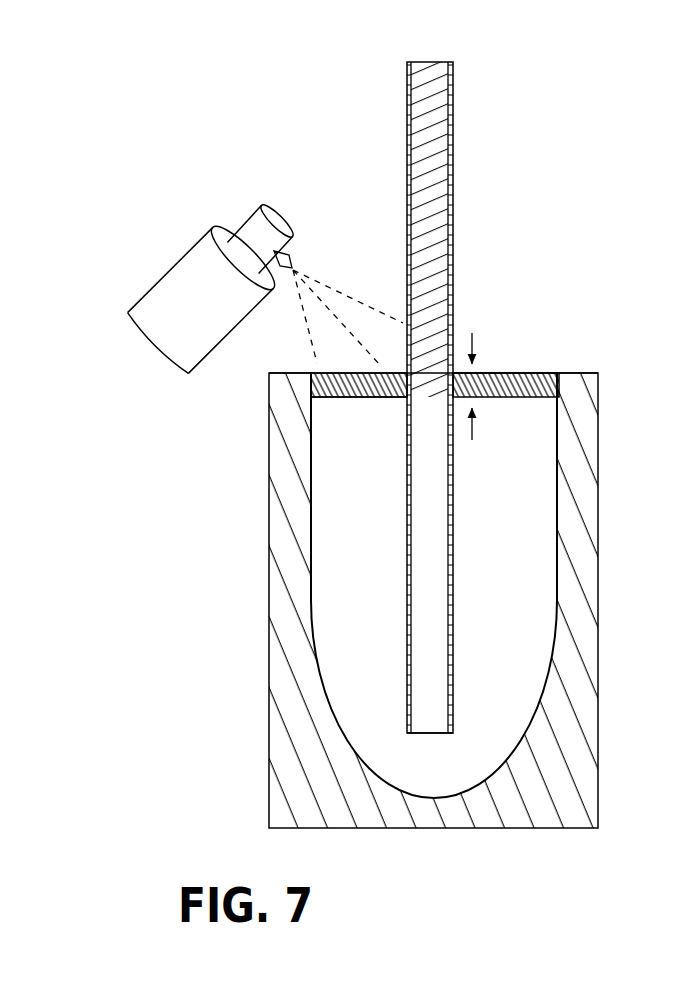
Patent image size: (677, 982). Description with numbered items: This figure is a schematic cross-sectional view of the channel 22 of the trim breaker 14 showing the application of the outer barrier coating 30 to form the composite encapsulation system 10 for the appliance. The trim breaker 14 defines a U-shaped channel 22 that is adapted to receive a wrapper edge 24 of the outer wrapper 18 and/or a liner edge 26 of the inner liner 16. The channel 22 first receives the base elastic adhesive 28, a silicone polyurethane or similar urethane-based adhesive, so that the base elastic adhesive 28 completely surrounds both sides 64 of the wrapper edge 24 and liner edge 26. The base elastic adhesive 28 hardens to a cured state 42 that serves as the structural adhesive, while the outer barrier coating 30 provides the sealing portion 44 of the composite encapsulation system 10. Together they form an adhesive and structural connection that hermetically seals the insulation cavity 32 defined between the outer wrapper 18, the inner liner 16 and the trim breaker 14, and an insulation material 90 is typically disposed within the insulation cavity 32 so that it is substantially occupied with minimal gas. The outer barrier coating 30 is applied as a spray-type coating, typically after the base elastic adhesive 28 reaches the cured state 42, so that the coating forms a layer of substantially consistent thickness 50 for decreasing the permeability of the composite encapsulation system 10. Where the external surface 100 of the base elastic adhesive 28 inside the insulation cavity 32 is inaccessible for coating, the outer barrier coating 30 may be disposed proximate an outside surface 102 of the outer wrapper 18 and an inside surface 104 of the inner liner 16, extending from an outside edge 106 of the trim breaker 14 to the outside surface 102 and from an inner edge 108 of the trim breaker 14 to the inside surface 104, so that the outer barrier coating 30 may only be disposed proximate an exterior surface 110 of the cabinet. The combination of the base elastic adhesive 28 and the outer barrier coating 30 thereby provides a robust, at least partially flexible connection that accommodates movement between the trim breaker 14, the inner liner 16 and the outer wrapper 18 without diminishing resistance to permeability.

The composite encapsulation system 10 is at (547, 186).
The trim breaker 14 is at (254, 639).
The inner liner 16 is at (431, 449).
The outer wrapper 18 is at (431, 449).
The channel 22 is at (503, 366).
The wrapper edge 24 is at (408, 735).
The liner edge 26 is at (452, 735).
The base elastic adhesive 28 is at (428, 585).
The outer barrier coating 30 is at (396, 308).
The insulation cavity 32 is at (425, 198).
The cured state 42 is at (540, 570).
The sealing portion 44 is at (332, 403).
The substantially consistent thickness 50 is at (473, 423).
The both sides 64 is at (409, 545).
The insulation material 90 is at (428, 206).
The external surface 100 is at (532, 372).
The outside surface 102 is at (350, 300).
The inside surface 104 is at (517, 311).
The outside edge 106 is at (287, 372).
The inner edge 108 is at (575, 372).
The exterior surface 110 is at (431, 449).